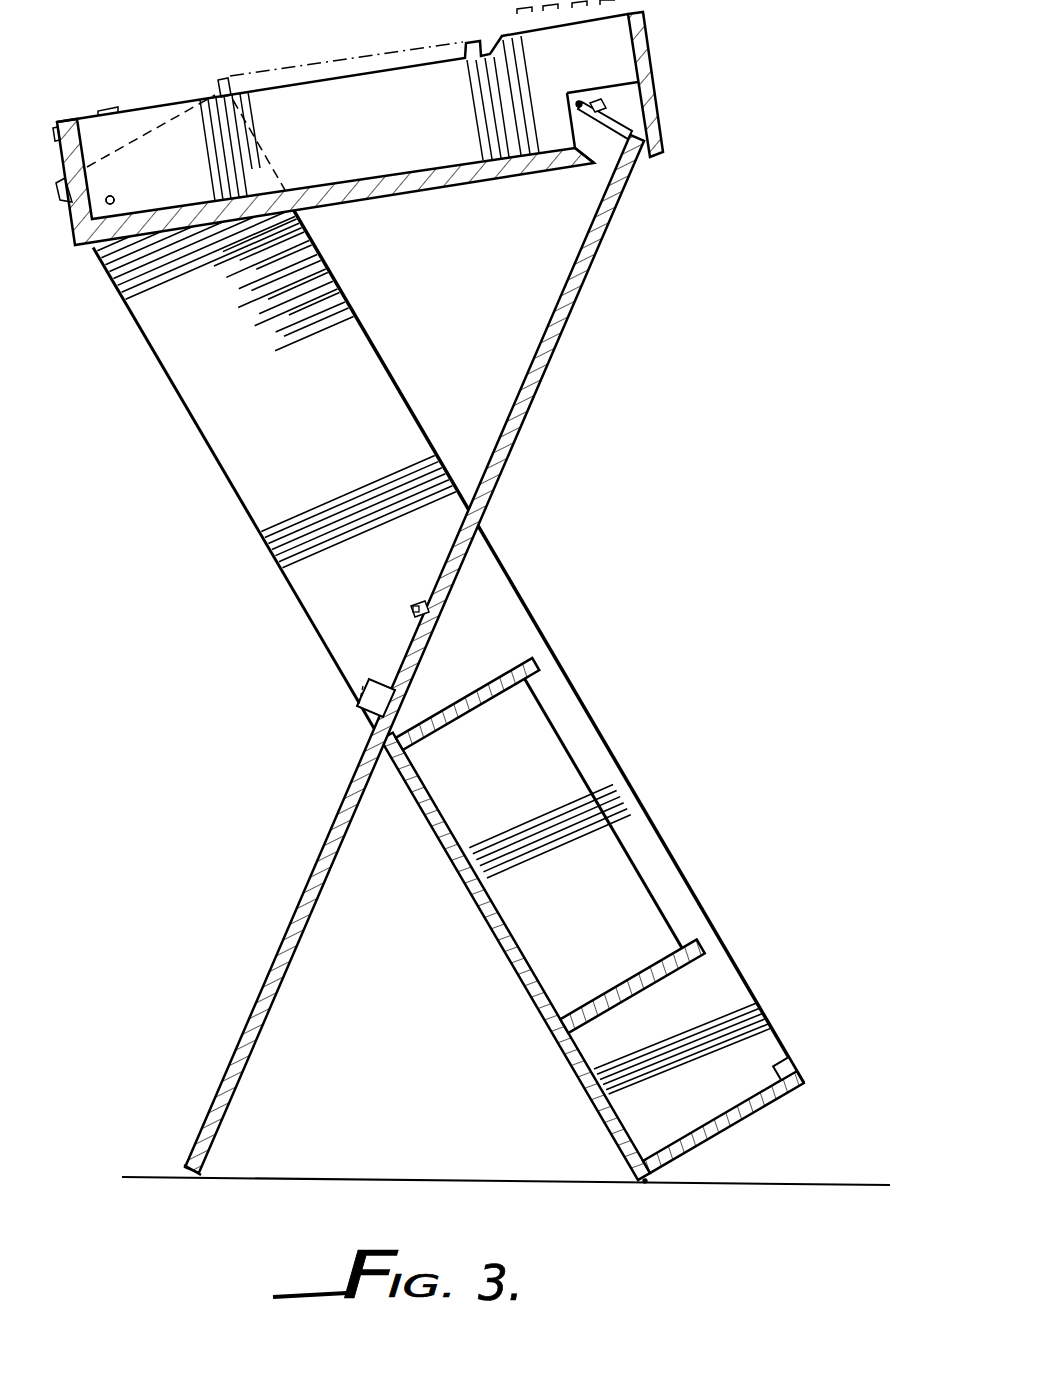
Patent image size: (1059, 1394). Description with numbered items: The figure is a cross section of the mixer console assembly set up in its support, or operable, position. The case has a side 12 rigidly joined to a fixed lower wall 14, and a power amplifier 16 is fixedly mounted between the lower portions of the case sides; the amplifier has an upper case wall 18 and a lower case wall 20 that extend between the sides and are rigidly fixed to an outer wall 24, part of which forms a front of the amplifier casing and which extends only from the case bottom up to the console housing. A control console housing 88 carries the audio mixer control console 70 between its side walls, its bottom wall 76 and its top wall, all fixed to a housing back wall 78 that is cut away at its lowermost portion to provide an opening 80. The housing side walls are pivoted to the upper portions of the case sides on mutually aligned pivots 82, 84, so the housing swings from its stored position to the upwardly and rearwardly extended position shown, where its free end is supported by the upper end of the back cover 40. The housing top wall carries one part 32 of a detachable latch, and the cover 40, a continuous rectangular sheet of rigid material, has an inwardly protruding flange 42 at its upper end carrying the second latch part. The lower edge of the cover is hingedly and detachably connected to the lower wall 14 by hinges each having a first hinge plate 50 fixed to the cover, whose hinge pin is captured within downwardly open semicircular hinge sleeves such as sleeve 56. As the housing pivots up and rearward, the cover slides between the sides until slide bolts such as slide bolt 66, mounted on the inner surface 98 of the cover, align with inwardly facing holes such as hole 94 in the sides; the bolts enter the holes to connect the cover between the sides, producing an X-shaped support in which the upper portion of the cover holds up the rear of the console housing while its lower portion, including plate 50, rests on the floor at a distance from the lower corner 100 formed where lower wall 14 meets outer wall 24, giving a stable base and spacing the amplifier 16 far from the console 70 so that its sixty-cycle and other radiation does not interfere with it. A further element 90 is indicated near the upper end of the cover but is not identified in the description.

The side 12 is at (468, 682).
The lower wall 14 is at (733, 1125).
The power amplifier 16 is at (613, 931).
The upper case wall 18 is at (459, 712).
The lower case wall 20 is at (620, 997).
The outer wall 24 is at (615, 1135).
The first latch part 32 is at (383, 125).
The back cover 40 is at (434, 655).
The flange 42 is at (625, 128).
The first hinge plate 50 is at (199, 1175).
The hinge sleeve 56 is at (793, 1065).
The slide bolt 66 is at (413, 606).
The audio mixer control console 70 is at (232, 74).
The bottom wall 76 is at (648, 42).
The housing back wall 78 is at (367, 200).
The opening 80 is at (608, 153).
The pivot 82 is at (115, 197).
The pivot 84 is at (155, 183).
The control console housing 88 is at (391, 134).
The upper end of strut 90 is at (622, 182).
The hole 94 is at (418, 620).
The inner surface 98 is at (519, 403).
The lower corner 100 is at (647, 1182).